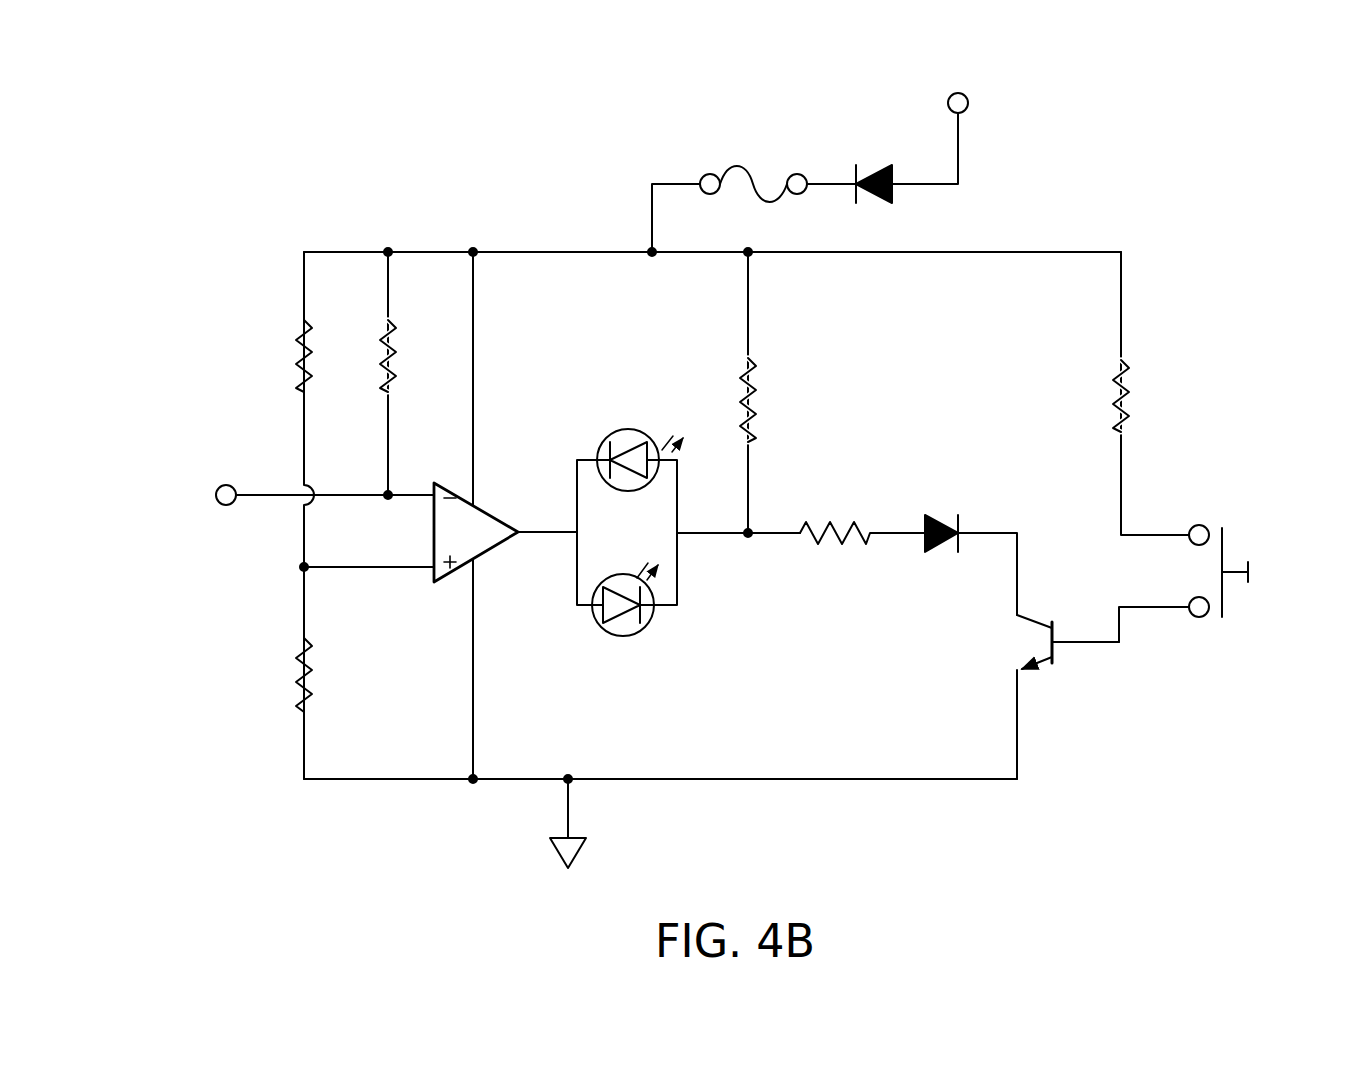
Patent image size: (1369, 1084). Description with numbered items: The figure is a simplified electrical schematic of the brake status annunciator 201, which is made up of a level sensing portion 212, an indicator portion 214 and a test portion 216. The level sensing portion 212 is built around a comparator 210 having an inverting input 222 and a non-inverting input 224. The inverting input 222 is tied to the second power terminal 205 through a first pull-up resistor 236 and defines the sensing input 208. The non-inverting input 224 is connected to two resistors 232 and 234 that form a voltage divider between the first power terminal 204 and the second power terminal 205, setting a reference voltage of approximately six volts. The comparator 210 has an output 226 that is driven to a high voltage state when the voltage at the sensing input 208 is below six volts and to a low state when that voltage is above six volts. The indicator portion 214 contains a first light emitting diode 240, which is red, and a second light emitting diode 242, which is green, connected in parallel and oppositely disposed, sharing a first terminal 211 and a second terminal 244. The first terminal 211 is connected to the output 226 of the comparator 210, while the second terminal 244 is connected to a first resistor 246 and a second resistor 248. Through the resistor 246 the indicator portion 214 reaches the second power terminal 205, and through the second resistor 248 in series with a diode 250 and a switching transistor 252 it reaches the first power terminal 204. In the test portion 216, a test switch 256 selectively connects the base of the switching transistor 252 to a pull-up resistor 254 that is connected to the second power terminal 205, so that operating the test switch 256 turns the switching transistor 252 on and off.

The brake status annunciator 201 is at (1132, 131).
The first power terminal 204 is at (556, 858).
The second power terminal 205 is at (947, 101).
The sensing input 208 is at (218, 488).
The comparator 210 is at (492, 470).
The first terminal 211 is at (550, 530).
The level sensing portion 212 is at (247, 381).
The indicator portion 214 is at (652, 352).
The test portion 216 is at (1205, 438).
The inverting input 222 is at (432, 500).
The non-inverting input 224 is at (432, 573).
The output 226 is at (526, 537).
The resistor 232 is at (300, 352).
The resistor 234 is at (295, 675).
The first pull-up resistor 236 is at (397, 342).
The first light emitting diode 240 is at (630, 430).
The second light emitting diode 242 is at (628, 632).
The second terminal 244 is at (710, 538).
The first resistor 246 is at (760, 410).
The second resistor 248 is at (836, 522).
The diode 250 is at (937, 520).
The switching transistor 252 is at (1006, 646).
The pull-up resistor 254 is at (1130, 381).
The test switch 256 is at (1236, 554).